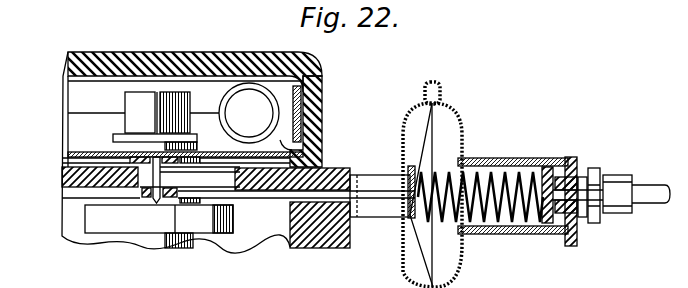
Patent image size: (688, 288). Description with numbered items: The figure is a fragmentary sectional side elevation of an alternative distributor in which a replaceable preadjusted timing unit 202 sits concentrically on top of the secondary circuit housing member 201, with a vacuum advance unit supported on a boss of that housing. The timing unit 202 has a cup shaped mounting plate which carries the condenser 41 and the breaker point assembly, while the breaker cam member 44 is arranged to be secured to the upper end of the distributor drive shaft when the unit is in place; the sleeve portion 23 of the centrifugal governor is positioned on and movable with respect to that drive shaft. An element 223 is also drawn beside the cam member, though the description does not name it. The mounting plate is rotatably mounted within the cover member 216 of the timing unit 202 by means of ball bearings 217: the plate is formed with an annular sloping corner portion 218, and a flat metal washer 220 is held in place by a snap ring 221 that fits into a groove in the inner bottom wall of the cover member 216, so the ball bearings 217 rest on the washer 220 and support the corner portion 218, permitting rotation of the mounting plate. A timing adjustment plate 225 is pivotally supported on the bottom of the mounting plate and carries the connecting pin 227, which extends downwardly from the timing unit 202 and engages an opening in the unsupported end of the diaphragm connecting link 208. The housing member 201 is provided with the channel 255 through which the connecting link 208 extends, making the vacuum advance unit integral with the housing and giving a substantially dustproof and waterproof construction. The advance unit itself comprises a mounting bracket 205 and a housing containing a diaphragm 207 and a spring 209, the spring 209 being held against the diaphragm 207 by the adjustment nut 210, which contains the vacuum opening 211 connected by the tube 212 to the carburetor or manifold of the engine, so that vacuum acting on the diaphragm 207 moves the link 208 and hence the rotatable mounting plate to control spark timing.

The secondary circuit housing member 201 is at (60, 235).
The cover member 216 is at (200, 52).
The replaceable preadjusted timing unit 202 is at (322, 97).
The annular sloping corner portion 218 is at (303, 114).
The ball bearings 217 is at (306, 130).
The breaker cam member 44 is at (123, 105).
The coil 223 is at (178, 121).
The condenser 41 is at (258, 122).
The connecting pin 227 is at (118, 153).
The timing adjustment plate 225 is at (118, 170).
The sleeve portion 23 is at (108, 167).
The snap ring 221 is at (325, 162).
The flat metal washer 220 is at (312, 150).
The diaphragm connecting link 208 is at (290, 219).
The channel 255 is at (298, 248).
The mounting bracket 205 is at (382, 217).
The diaphragm 207 is at (433, 122).
The spring 209 is at (498, 176).
The vacuum opening 211 is at (528, 212).
The adjustment nut 210 is at (597, 172).
The tube 212 is at (645, 206).